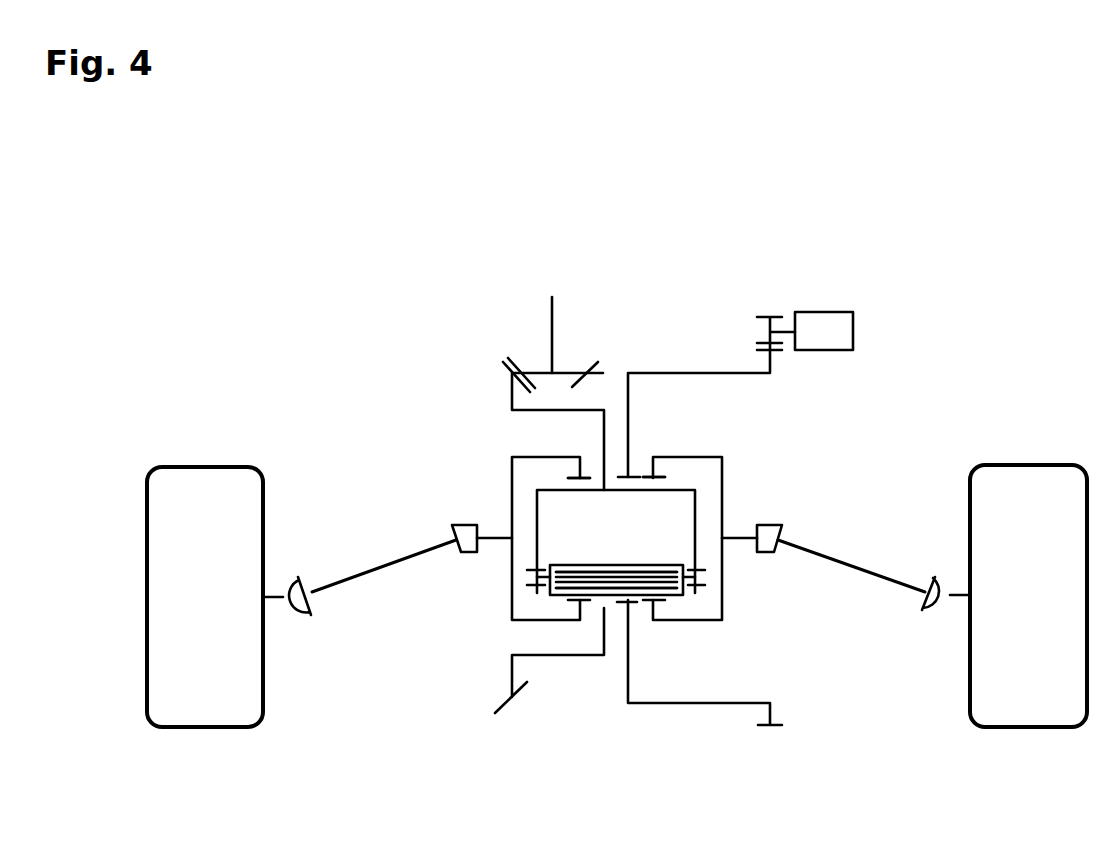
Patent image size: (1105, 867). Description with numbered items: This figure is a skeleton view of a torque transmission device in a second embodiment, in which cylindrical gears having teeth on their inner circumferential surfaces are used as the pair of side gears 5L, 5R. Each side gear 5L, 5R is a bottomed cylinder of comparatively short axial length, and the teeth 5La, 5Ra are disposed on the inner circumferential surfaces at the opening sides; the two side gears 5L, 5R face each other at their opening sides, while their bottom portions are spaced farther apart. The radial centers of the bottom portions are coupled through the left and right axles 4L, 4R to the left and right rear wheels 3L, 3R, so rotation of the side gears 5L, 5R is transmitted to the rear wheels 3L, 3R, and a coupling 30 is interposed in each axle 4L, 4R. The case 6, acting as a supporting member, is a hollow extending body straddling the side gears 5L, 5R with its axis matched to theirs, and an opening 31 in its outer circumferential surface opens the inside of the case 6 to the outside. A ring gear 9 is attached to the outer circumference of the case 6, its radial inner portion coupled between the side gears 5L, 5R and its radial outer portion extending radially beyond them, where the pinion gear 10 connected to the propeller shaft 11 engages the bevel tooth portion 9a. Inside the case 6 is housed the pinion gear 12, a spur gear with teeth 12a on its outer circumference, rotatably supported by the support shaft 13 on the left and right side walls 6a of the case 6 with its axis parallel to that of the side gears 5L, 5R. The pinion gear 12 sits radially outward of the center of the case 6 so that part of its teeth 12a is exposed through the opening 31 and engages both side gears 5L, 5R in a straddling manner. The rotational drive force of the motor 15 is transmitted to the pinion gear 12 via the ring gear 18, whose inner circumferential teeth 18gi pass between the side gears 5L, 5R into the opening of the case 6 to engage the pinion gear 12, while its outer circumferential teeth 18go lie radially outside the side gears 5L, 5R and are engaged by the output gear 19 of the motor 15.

The left rear wheel 3L is at (195, 714).
The right rear wheel 3R is at (1028, 714).
The left axle 4L is at (493, 538).
The right axle 4R is at (741, 540).
The left side gear 5L is at (512, 607).
The right side gear 5R is at (723, 605).
The teeth of left side gear 5La is at (572, 478).
The teeth of right side gear 5Ra is at (663, 478).
The case 6 is at (699, 509).
The side walls of case 6a is at (697, 525).
The ring gear 9 is at (510, 395).
The tooth portion (bevel gear) 9a is at (503, 372).
The pinion gear 10 is at (510, 358).
The propeller shaft 11 is at (553, 312).
The pinion gear 12 is at (720, 488).
The teeth of pinion gear 12a is at (662, 573).
The support shaft 13 is at (545, 572).
The motor 15 is at (828, 318).
The ring gear 18 is at (702, 703).
The inner circumferential teeth 18gi is at (622, 476).
The outer circumferential teeth 18go is at (766, 352).
The output gear 19 is at (763, 315).
The coupling 30 is at (294, 613).
The opening 31 is at (615, 597).